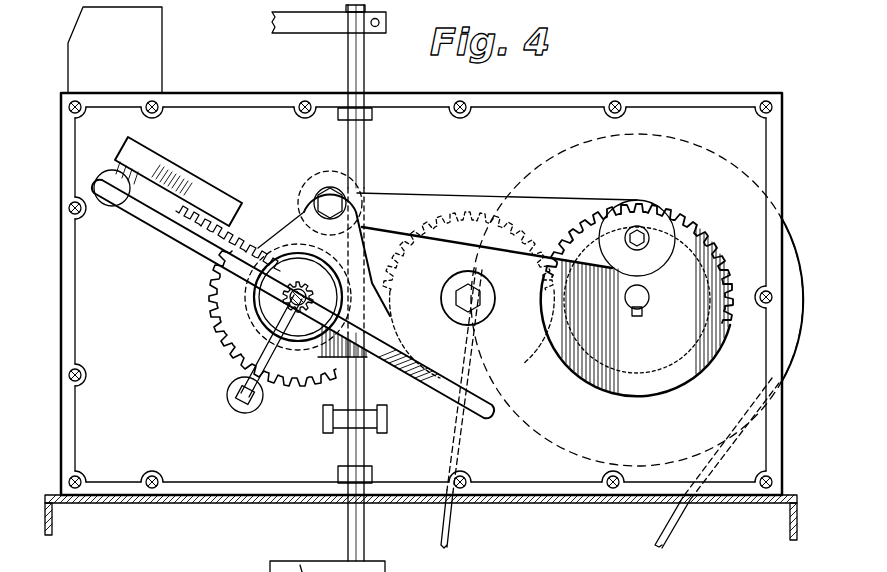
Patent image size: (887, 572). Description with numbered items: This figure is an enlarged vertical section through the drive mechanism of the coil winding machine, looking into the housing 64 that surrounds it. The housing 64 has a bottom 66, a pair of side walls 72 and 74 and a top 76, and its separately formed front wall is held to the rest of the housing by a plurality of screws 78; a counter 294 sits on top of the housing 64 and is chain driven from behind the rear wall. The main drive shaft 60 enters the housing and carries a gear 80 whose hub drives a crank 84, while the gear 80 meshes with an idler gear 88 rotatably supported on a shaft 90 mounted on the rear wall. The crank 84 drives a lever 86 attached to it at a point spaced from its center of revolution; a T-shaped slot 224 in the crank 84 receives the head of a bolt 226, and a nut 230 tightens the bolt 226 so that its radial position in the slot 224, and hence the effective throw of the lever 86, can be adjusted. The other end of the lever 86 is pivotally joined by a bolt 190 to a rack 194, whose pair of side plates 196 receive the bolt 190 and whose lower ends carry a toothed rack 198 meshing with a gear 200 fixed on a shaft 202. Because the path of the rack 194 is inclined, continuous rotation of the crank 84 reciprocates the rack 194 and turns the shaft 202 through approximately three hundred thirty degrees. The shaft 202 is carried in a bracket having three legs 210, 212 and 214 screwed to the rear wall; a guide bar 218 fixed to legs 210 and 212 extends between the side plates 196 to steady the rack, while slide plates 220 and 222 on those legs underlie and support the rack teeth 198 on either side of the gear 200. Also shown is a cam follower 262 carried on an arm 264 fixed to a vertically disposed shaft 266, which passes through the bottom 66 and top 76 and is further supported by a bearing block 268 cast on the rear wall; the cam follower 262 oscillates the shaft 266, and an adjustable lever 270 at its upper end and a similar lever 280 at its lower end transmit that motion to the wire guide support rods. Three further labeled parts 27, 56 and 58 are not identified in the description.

The screw 27 is at (170, 502).
The cable 56 is at (447, 533).
The drum 58 is at (788, 250).
The main drive shaft 60 is at (648, 295).
The housing 64 is at (419, 269).
The bottom 66 is at (218, 496).
The side wall 72 is at (63, 345).
The side wall 74 is at (773, 206).
The top 76 is at (581, 105).
The screws 78 is at (619, 102).
The gear 80 is at (703, 257).
The crank 84 is at (700, 363).
The lever 86 is at (555, 217).
The idler gear 88 is at (442, 272).
The shaft 90 is at (491, 292).
The bolt 190 is at (300, 165).
The rack 194 is at (190, 276).
The side plates 196 is at (300, 188).
The toothed rack 198 is at (172, 215).
The gear 200 is at (250, 310).
The shaft 202 is at (290, 302).
The leg 210 is at (173, 229).
The leg 212 is at (293, 303).
The leg 214 is at (232, 372).
The guide bar 218 is at (200, 142).
The slide plate 220 is at (250, 300).
The slide plate 222 is at (375, 360).
The T-shaped slot 224 is at (636, 212).
The bolt 226 is at (650, 230).
The nut 230 is at (644, 222).
The cam follower 262 is at (206, 212).
The arm 264 is at (402, 197).
The shaft 266 is at (366, 138).
The bearing block 268 is at (324, 415).
The lever 270 is at (306, 30).
The lever 280 is at (302, 562).
The counter 294 is at (158, 32).